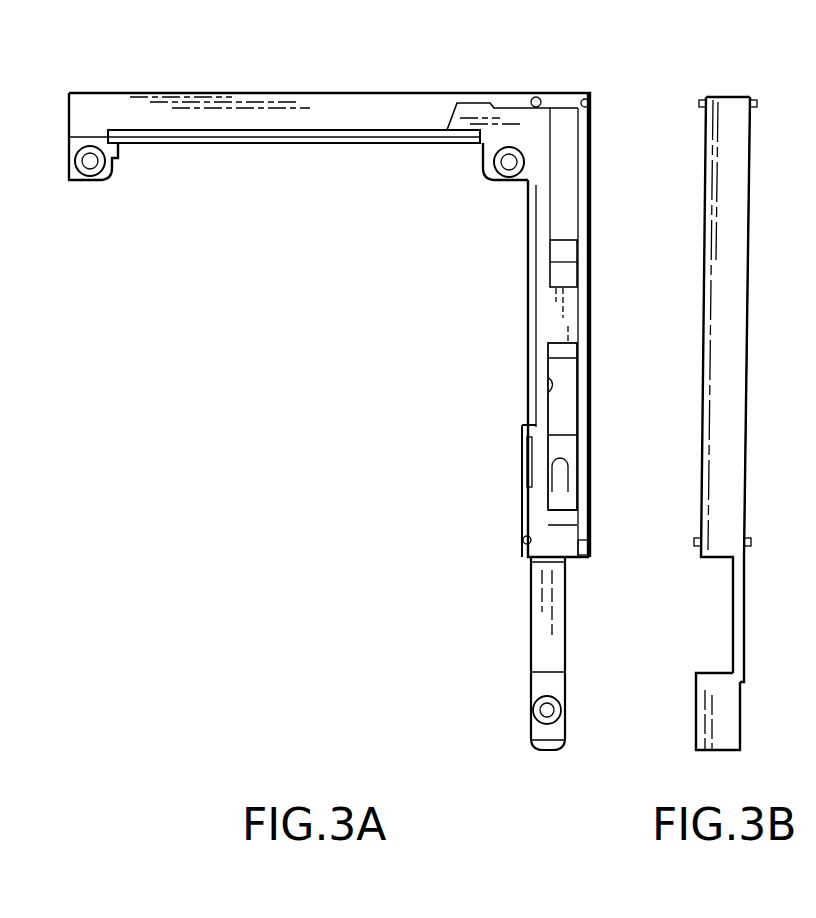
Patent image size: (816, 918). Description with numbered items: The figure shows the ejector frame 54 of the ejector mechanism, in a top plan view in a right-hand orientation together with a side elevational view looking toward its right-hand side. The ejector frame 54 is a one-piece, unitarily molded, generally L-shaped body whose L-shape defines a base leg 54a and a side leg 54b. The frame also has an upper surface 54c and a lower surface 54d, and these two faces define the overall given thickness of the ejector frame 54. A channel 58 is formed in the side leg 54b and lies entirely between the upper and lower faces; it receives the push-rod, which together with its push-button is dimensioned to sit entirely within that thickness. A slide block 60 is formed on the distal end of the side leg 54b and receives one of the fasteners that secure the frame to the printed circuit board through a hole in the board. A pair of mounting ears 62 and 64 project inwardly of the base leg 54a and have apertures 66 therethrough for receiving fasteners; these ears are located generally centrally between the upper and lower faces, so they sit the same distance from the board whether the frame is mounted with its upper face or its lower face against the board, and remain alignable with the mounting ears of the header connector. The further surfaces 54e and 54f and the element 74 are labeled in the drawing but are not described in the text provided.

In FIG. 3A, the ejector frame 54 is at (308, 76).
In FIG. 3B, the ejector frame 54 is at (727, 86).
In FIG. 3A, the base leg 54a is at (163, 92).
In FIG. 3A, the side leg 54b is at (588, 341).
In FIG. 3B, the side leg 54b is at (726, 338).
In FIG. 3B, the upper surface 54c is at (707, 130).
In FIG. 3A, the lower surface 54d is at (333, 117).
In FIG. 3B, the side wall of vertical arm 54e is at (755, 150).
In FIG. 3B, the side wall of vertical arm 54f is at (780, 443).
In FIG. 3A, the channel 58 is at (550, 378).
In FIG. 3A, the slide block 60 is at (528, 685).
In FIG. 3B, the slide block 60 is at (703, 722).
In FIG. 3A, the mounting ear 62 is at (120, 158).
In FIG. 3A, the mounting ear 64 is at (488, 158).
In FIG. 3A, the apertures 66 is at (86, 166).
In FIG. 3A, the pivot pin 74 is at (540, 752).